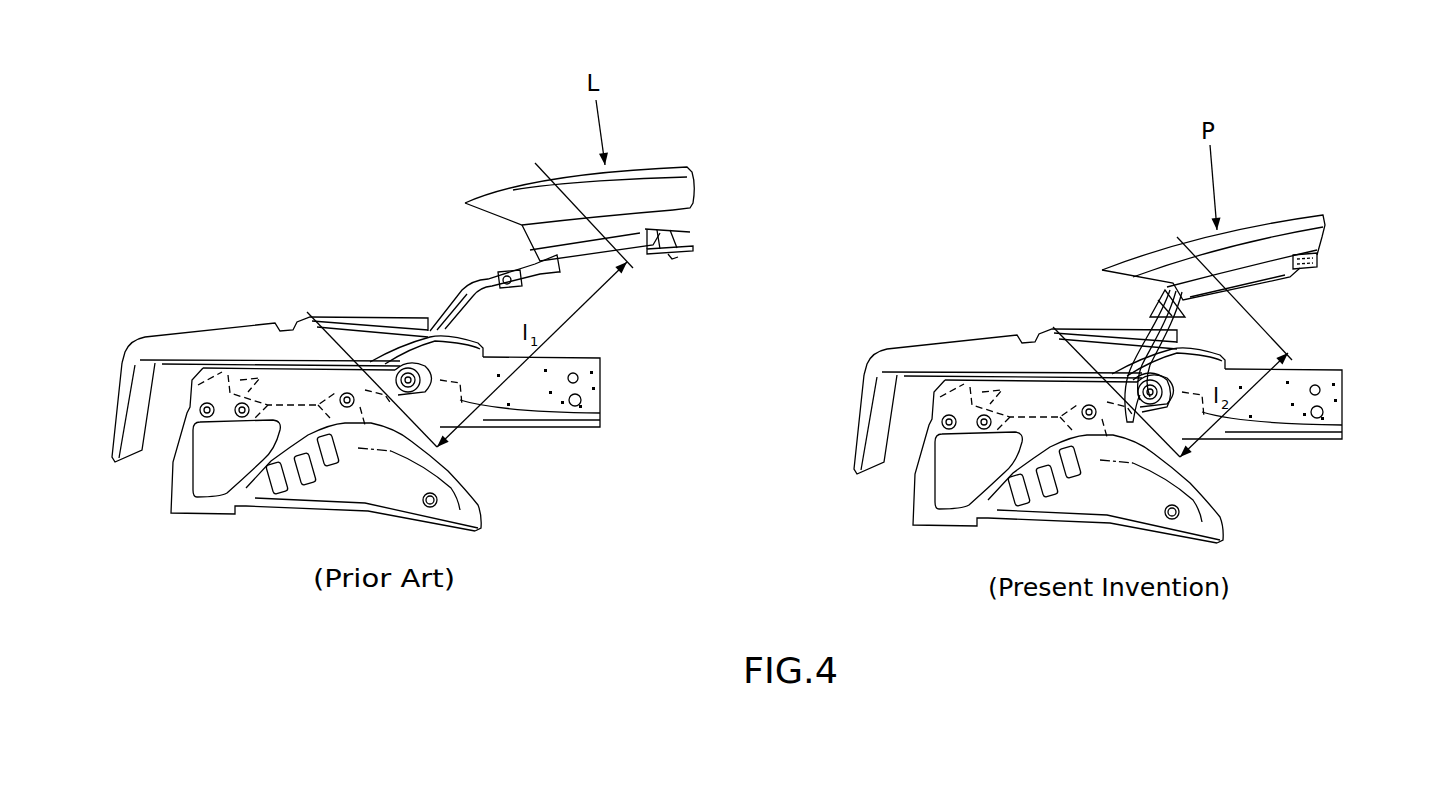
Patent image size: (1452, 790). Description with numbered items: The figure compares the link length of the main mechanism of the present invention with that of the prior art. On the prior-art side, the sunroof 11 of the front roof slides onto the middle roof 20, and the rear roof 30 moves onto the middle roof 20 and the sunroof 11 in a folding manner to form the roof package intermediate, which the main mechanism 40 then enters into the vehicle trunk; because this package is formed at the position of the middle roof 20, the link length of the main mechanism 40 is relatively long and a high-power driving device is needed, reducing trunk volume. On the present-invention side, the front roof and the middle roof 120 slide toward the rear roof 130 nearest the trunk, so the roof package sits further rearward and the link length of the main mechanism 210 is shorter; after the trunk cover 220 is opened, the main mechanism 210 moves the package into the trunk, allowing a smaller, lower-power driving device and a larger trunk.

The sunroof 11 is at (673, 212).
The middle roof 20 is at (657, 262).
The rear roof 30 is at (680, 167).
The main mechanism 40 is at (458, 285).
The middle roof 120 is at (1300, 270).
The rear roof 130 is at (1295, 213).
The main mechanism 210 is at (1160, 300).
The trunk cover 220 is at (923, 340).